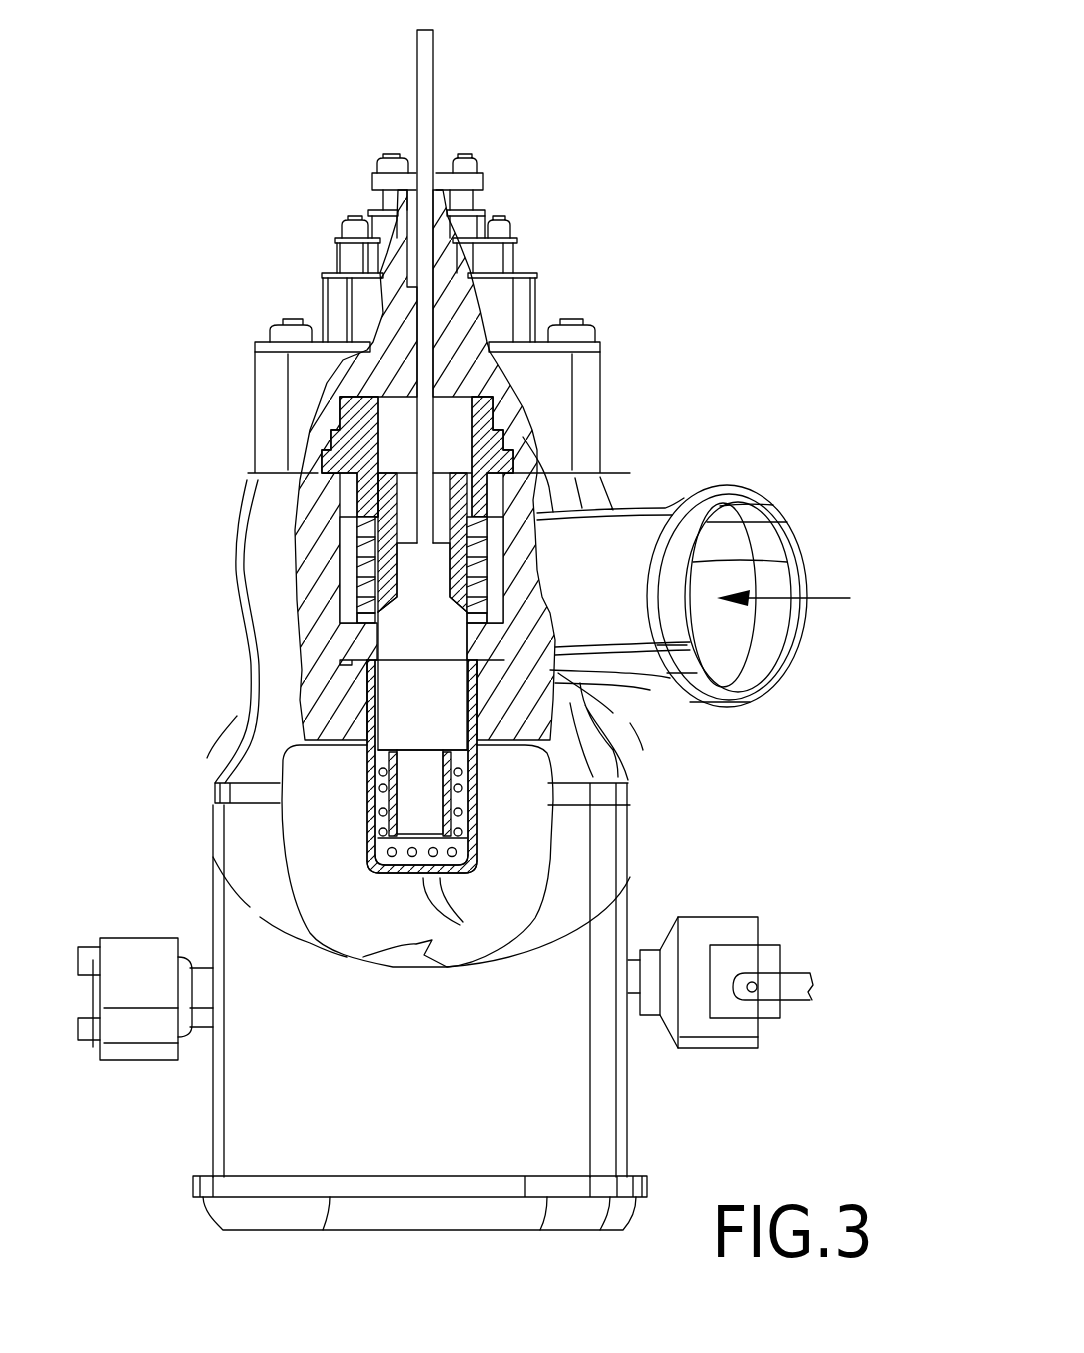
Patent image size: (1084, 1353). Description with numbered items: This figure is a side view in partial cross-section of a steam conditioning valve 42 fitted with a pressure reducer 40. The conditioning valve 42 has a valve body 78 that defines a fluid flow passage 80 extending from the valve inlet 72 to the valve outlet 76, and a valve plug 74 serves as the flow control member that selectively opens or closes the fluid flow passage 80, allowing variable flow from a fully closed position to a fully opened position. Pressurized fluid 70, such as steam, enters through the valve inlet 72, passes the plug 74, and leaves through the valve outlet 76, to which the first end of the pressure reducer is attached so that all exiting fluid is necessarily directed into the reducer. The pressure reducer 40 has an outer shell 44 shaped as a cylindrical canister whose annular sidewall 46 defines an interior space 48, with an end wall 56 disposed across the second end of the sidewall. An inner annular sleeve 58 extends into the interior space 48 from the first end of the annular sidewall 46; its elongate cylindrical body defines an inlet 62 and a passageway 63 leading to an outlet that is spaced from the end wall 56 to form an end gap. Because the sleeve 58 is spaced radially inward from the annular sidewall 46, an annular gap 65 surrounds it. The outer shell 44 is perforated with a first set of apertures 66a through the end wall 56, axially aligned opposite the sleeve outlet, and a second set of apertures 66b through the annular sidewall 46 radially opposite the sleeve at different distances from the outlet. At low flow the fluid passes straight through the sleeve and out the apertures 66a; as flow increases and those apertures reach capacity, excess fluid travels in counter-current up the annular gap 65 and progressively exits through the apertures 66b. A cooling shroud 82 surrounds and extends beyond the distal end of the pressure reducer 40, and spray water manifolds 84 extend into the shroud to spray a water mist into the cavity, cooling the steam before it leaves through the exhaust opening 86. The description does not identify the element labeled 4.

The tank 4 is at (653, 833).
The pressure reducer 40 is at (370, 879).
The steam conditioning valve 42 is at (690, 348).
The outer shell 44 is at (470, 867).
The annular sidewall 46 is at (372, 823).
The interior space 48 is at (392, 843).
The end wall 56 is at (407, 875).
The inner annular sleeve 58 is at (450, 813).
The inlet 62 is at (403, 752).
The passageway 63 is at (440, 803).
The annular gap 65 is at (455, 811).
The first set of apertures 66a is at (473, 915).
The second set of apertures 66b is at (385, 786).
The pressurized fluid 70 is at (820, 598).
The valve inlet 72 is at (723, 650).
The valve plug 74 is at (413, 512).
The valve outlet 76 is at (398, 711).
The valve body 78 is at (303, 538).
The fluid flow passage 80 is at (453, 654).
The cooling shroud 82 is at (248, 1067).
The spray water manifolds 84 is at (142, 1060).
The exhaust opening 86 is at (350, 1220).